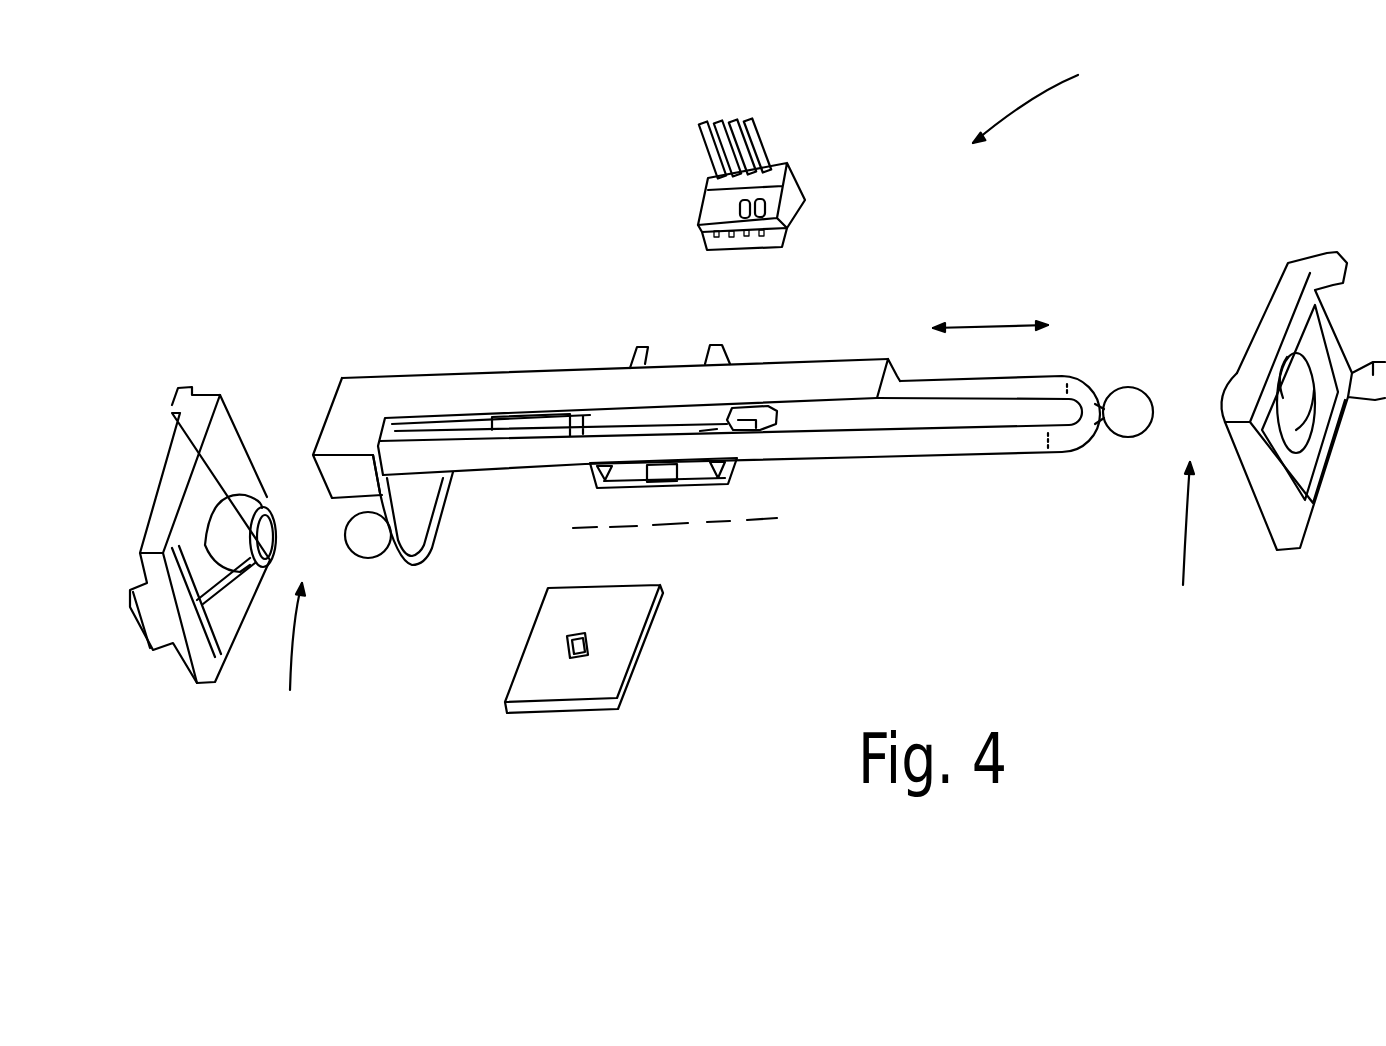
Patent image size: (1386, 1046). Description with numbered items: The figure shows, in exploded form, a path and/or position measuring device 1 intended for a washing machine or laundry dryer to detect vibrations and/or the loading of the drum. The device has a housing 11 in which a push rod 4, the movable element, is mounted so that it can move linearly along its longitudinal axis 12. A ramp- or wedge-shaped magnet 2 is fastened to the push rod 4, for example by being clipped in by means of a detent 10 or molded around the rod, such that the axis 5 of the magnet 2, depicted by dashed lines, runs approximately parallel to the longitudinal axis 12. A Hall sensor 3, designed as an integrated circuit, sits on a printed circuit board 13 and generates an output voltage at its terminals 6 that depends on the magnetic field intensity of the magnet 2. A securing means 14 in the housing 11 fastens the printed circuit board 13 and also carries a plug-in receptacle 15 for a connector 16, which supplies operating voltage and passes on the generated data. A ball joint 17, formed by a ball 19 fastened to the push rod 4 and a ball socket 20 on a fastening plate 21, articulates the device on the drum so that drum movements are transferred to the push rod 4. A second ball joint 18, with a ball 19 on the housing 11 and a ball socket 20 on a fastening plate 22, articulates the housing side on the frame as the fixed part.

The path and/or position measuring device 1 is at (1034, 96).
The magnet 2 is at (606, 418).
The sensor 3 is at (567, 647).
The push rod 4 is at (978, 438).
The axis of the magnet 5 is at (713, 522).
The terminals 6 is at (588, 647).
The detent 10 is at (745, 410).
The housing 11 is at (370, 398).
The longitudinal axis of the push rod 12 is at (995, 327).
The printed circuit board 13 is at (556, 682).
The securing means 14 is at (593, 482).
The plug-in receptacle 15 is at (638, 347).
The connector 16 is at (787, 163).
The ball joint 17 is at (1180, 542).
The ball joint 18 is at (290, 657).
The ball 19 is at (368, 537).
The ball socket 20 is at (263, 527).
The fastening plate 21 is at (1283, 535).
The fastening plate 22 is at (173, 615).